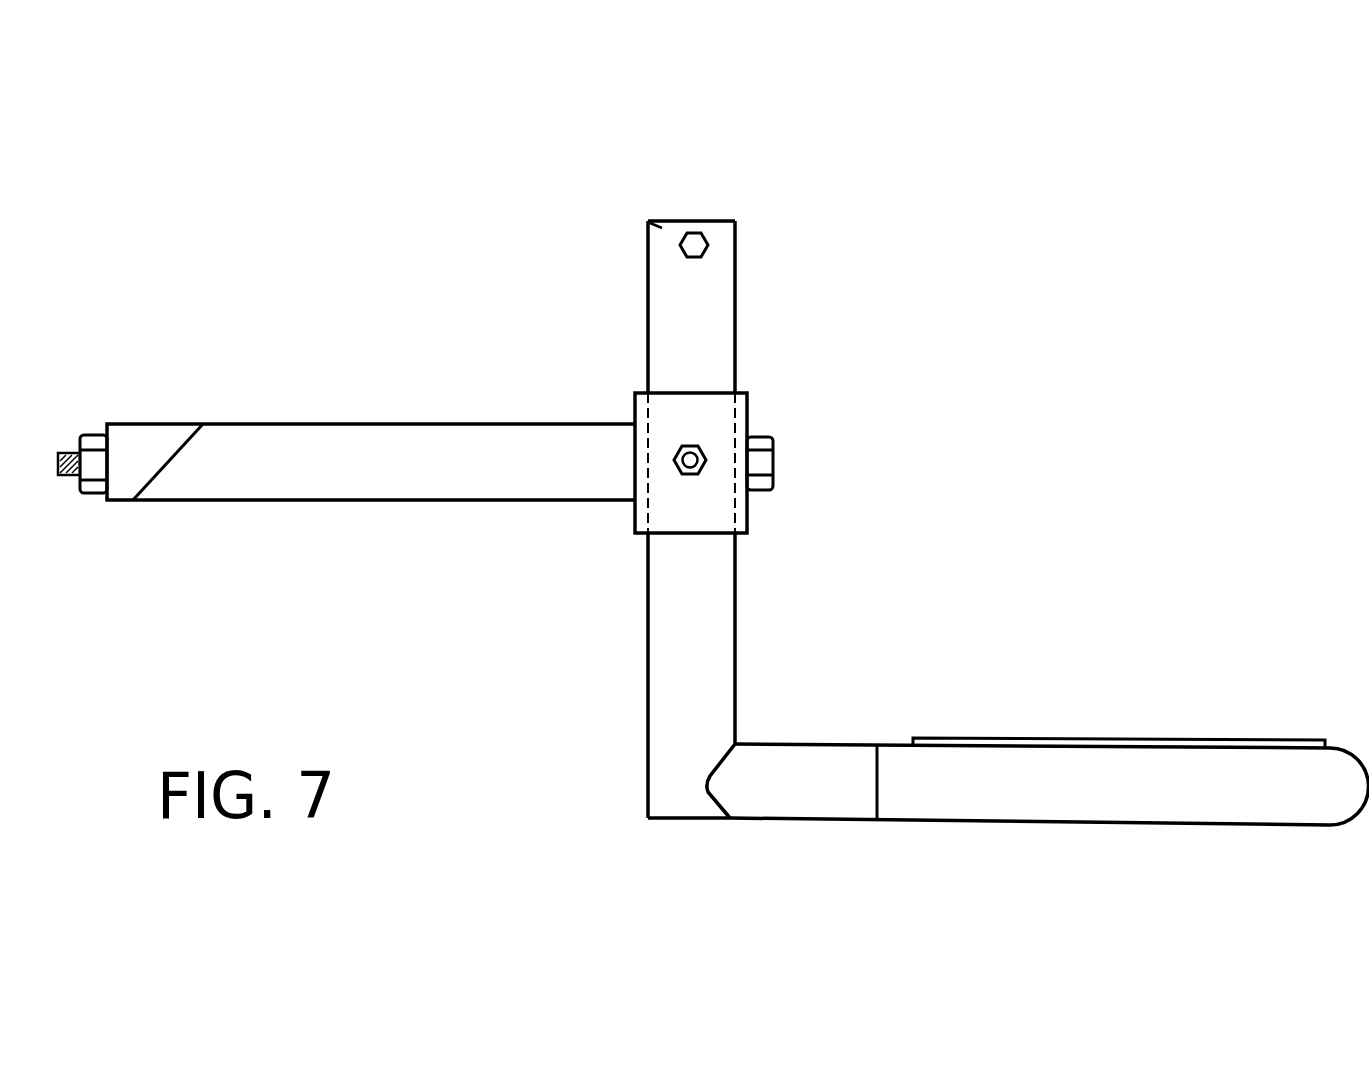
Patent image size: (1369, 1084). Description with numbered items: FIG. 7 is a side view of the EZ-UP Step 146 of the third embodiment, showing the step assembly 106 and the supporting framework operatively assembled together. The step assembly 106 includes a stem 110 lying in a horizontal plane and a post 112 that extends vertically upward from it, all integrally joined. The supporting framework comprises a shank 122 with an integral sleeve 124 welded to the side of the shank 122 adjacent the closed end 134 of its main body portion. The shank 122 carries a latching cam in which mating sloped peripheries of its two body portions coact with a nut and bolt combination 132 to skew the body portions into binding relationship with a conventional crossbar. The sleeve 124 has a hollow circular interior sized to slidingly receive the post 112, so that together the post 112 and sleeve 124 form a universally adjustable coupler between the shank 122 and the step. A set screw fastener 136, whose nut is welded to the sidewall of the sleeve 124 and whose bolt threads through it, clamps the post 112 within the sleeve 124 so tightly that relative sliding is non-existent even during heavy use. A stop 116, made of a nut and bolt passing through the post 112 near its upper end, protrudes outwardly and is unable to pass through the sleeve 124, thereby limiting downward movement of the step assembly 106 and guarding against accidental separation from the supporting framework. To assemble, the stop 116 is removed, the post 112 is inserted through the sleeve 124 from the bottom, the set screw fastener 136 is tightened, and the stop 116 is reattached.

The step assembly 106 is at (1033, 773).
The stem 110 is at (790, 785).
The post 112 is at (740, 308).
The stop 116 is at (700, 243).
The shank 122 is at (325, 423).
The sleeve 124 is at (635, 400).
The nut and bolt combination 132 is at (80, 450).
The closed end 134 is at (662, 228).
The set screw fastener 136 is at (685, 470).
The EZ-UP Step 146 is at (1033, 568).